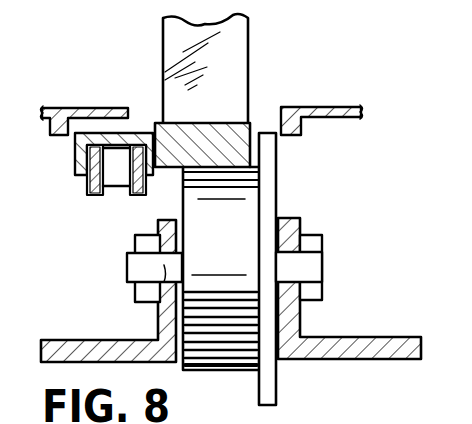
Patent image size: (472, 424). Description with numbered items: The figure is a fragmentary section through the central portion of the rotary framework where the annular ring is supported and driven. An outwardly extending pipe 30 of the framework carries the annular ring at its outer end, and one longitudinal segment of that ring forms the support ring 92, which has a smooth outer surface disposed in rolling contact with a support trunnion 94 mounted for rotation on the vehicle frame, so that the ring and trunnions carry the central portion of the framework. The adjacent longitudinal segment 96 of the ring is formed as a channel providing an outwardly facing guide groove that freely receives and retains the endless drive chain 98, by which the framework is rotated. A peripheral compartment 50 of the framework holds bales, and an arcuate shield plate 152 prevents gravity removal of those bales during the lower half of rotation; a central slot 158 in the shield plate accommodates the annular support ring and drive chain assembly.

The outwardly extending pipe 30 is at (233, 31).
The central slot 158 is at (147, 115).
The peripheral compartment 50 is at (220, 295).
The support trunnion 94 is at (226, 368).
The support ring 92 is at (255, 128).
The arcuate shield plate 152 is at (86, 108).
The longitudinal segment of the ring 96 is at (75, 160).
The endless drive chain 98 is at (100, 193).